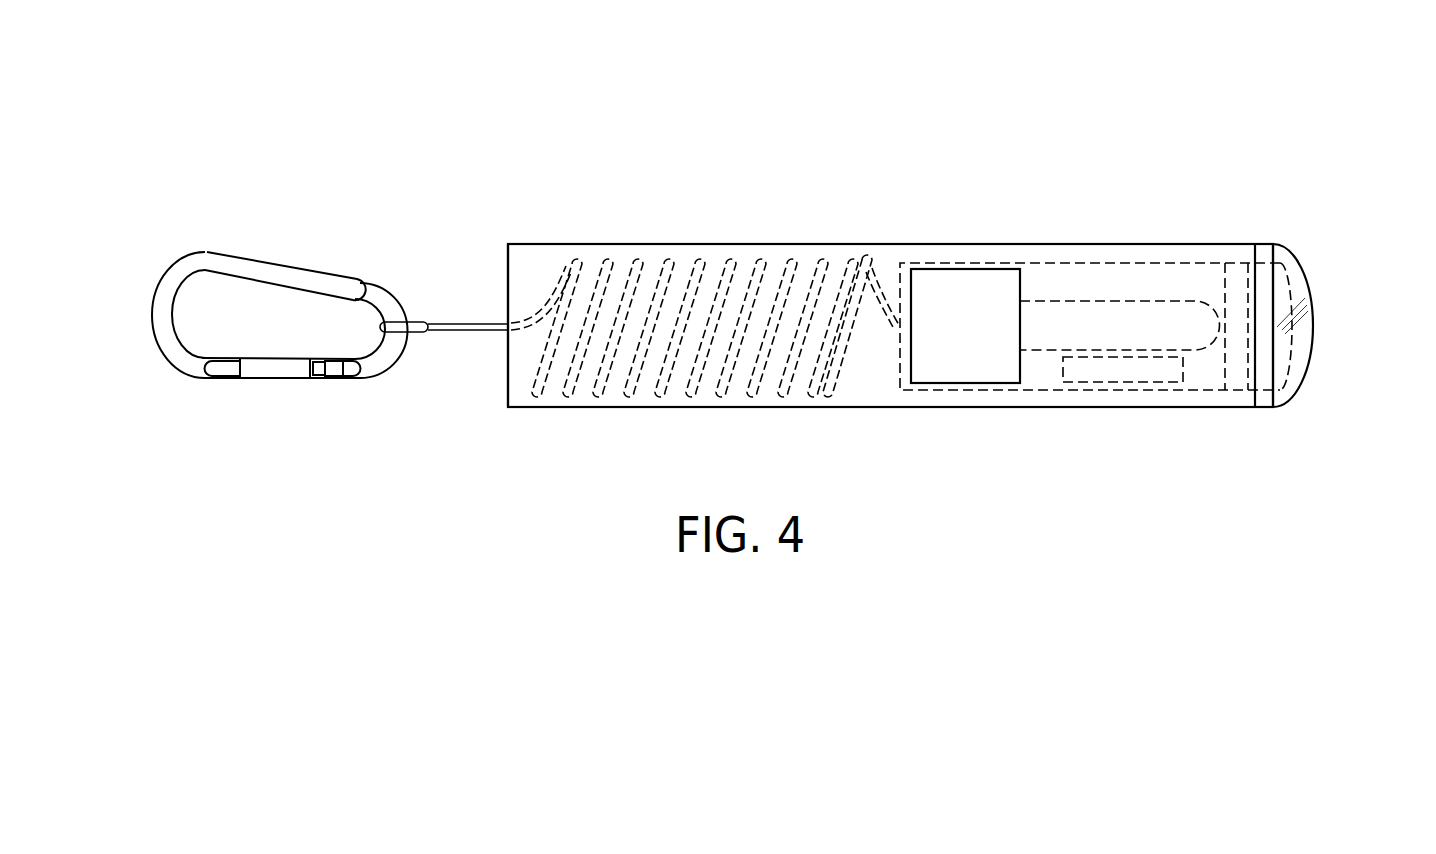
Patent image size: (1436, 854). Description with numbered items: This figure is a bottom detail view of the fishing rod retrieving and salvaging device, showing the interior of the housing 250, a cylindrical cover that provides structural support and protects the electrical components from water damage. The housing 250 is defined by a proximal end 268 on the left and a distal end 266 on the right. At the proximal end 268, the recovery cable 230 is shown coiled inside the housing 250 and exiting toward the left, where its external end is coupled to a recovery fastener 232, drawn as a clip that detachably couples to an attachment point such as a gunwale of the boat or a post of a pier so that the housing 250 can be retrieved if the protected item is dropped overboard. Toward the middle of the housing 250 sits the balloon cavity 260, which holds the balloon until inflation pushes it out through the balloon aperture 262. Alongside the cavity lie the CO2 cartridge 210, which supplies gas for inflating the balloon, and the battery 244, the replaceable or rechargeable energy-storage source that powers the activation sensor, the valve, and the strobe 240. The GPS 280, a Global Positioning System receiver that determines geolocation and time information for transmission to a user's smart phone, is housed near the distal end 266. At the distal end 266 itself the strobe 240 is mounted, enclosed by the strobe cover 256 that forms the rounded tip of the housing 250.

The CO2 cartridge 210 is at (1133, 301).
The recovery cable 230 is at (640, 258).
The recovery fastener 232 is at (205, 252).
The strobe 240 is at (1285, 363).
The battery 244 is at (1097, 367).
The housing 250 is at (882, 408).
The strobe cover 256 is at (1314, 327).
The balloon cavity 260 is at (943, 283).
The balloon aperture 262 is at (1023, 277).
The distal end 266 is at (1258, 160).
The proximal end 268 is at (509, 160).
The GPS 280 is at (1233, 377).